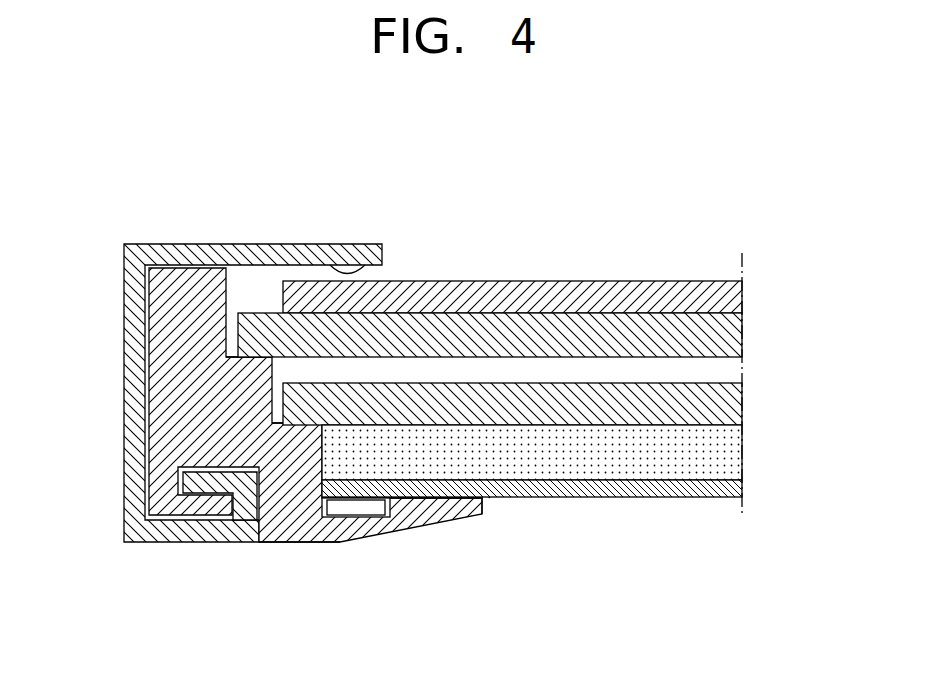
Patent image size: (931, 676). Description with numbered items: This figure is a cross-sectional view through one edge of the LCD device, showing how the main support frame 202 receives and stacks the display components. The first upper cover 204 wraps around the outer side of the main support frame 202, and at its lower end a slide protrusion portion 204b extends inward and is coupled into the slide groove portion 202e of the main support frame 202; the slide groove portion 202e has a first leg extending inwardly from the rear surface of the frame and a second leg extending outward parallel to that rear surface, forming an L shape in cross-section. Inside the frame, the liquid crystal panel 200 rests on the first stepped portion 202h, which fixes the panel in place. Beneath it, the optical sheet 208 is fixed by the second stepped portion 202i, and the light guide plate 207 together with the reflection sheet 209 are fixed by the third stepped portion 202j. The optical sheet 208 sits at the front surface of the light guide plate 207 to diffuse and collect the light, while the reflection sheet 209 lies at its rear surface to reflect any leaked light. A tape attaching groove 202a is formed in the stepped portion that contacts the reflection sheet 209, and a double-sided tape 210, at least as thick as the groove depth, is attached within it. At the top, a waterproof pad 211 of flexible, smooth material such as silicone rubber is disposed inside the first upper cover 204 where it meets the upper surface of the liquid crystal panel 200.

The liquid crystal panel 200 is at (752, 282).
The main support frame 202 is at (162, 438).
The tape attaching groove 202a is at (391, 503).
The slide groove portion 202e is at (259, 543).
The first stepped portion 202h is at (227, 357).
The second stepped portion 202i is at (272, 423).
The third stepped portion 202j is at (487, 498).
The first upper cover 204 is at (130, 360).
The slide protrusion portion 204b is at (197, 533).
The light guide plate 207 is at (735, 456).
The optical sheet 208 is at (735, 403).
The reflection sheet 209 is at (735, 487).
The double-sided tape 210 is at (356, 508).
The waterproof pad 211 is at (347, 266).